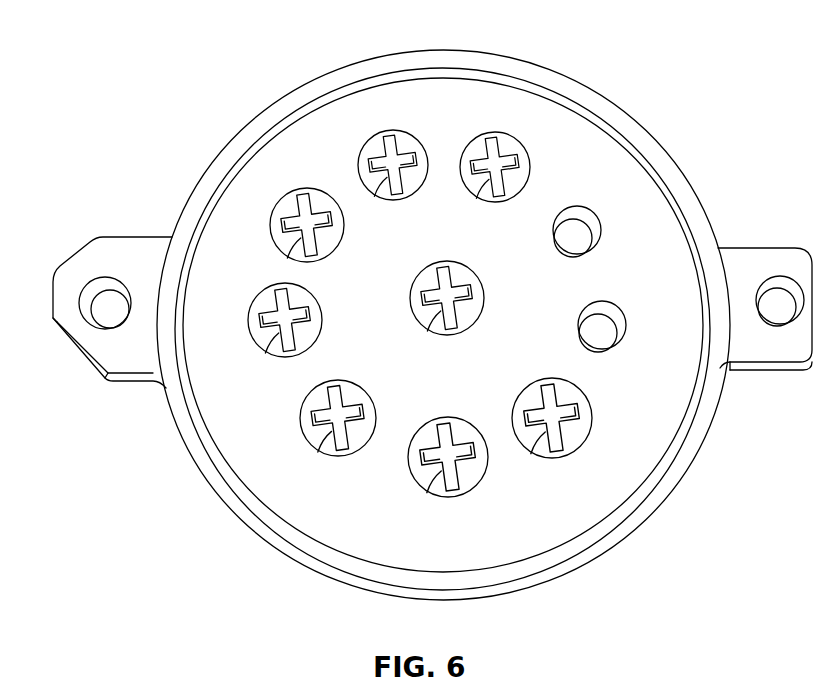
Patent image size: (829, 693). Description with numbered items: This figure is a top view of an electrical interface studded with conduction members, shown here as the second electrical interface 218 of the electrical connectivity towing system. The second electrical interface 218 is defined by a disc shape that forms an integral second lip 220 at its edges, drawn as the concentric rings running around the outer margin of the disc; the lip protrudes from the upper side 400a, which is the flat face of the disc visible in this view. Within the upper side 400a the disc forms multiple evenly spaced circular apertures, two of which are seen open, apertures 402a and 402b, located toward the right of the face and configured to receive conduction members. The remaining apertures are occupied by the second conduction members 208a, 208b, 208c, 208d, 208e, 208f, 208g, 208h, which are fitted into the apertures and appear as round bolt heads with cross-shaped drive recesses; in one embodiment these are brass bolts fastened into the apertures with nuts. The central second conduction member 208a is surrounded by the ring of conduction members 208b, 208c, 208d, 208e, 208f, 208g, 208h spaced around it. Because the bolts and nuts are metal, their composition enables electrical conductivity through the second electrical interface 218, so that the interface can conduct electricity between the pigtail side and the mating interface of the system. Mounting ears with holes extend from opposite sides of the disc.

The second electrical interface 218 is at (100, 55).
The second lip 220 is at (276, 103).
The second conduction member 208a is at (476, 290).
The second conduction member 208b is at (553, 432).
The second conduction member 208c is at (452, 468).
The second conduction member 208d is at (322, 428).
The second conduction member 208e is at (266, 352).
The second conduction member 208f is at (278, 213).
The second conduction member 208g is at (392, 138).
The second conduction member 208h is at (518, 148).
The upper side 400a is at (413, 505).
The first aperture 402a is at (585, 222).
The first aperture 402b is at (613, 320).